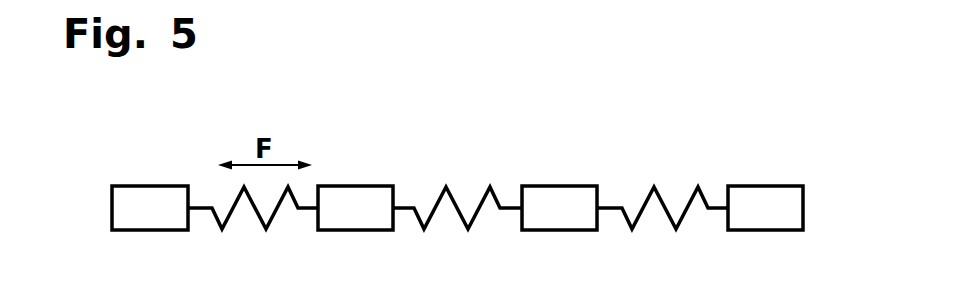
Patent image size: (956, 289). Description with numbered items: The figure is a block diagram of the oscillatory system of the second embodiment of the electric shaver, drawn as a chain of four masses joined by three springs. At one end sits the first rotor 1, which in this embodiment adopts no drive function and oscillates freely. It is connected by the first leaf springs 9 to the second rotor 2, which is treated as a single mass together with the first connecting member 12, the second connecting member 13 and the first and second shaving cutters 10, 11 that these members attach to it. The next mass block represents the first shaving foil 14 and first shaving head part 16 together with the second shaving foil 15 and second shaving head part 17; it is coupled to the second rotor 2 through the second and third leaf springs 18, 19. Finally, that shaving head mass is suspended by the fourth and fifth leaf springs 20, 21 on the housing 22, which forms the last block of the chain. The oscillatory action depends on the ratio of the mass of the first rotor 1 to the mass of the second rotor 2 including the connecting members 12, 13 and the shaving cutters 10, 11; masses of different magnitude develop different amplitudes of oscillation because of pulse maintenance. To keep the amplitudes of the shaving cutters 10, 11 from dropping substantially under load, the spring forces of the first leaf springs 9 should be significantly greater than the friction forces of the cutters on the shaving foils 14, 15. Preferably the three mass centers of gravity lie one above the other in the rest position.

The first rotor 1 is at (133, 200).
The first leaf springs 9 is at (232, 207).
The second rotor 2 is at (388, 151).
The first shaving cutter 10 is at (388, 151).
The second shaving cutter 11 is at (388, 151).
The first connecting member 12 is at (388, 151).
The second connecting member 13 is at (363, 197).
The second leaf spring 18 is at (468, 176).
The third leaf spring 19 is at (455, 198).
The first shaving foil 14 is at (615, 151).
The second shaving foil 15 is at (615, 151).
The first shaving head part 16 is at (615, 151).
The second shaving head part 17 is at (552, 195).
The fourth leaf spring 20 is at (670, 176).
The fifth leaf spring 21 is at (660, 198).
The housing 22 is at (753, 200).